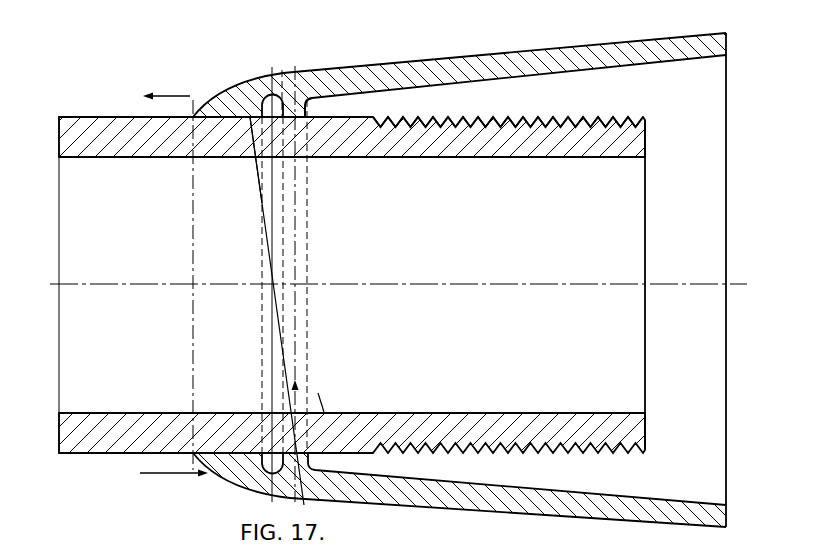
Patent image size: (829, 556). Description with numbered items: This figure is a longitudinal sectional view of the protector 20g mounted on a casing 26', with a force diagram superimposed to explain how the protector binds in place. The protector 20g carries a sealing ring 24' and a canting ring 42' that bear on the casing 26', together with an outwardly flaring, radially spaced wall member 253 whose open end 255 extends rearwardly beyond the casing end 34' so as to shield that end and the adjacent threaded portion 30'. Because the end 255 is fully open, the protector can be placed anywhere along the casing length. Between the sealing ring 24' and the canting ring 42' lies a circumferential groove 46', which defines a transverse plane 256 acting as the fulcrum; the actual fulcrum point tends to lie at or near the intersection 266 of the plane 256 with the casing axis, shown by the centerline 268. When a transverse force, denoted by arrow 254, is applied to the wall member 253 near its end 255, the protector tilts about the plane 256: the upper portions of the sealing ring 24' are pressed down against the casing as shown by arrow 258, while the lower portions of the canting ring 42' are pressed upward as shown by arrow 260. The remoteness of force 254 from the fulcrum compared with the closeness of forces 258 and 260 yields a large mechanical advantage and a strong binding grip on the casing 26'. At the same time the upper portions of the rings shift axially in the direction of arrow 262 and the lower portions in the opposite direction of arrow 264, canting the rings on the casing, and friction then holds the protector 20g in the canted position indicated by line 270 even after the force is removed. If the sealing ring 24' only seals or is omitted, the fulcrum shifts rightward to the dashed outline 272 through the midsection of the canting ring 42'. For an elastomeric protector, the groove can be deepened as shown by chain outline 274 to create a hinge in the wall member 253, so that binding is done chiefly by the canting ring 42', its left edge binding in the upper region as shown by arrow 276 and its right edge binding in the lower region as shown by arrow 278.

The protector 20g is at (401, 72).
The sealing ring 24' is at (238, 87).
The casing 26' is at (352, 285).
The threaded portion 30' is at (508, 111).
The casing end 34' is at (666, 285).
The canting ring 42' is at (329, 106).
The circumferential groove 46' is at (241, 477).
The wall member 253 is at (548, 55).
The arrow denoting transverse force 254 is at (719, 553).
The end of wall member 255 is at (727, 156).
The transverse plane 256 is at (272, 345).
The arrow denoting downward force 258 is at (232, 174).
The arrow denoting upward force 260 is at (299, 392).
The arrow denoting axial displacement 262 is at (175, 96).
The arrow denoting opposite axial displacement 264 is at (184, 476).
The intersection 266 is at (277, 283).
The central axis of pipe 268 is at (735, 284).
The line denoting canted position 270 is at (255, 170).
The dashed outline of shifted fulcrum plane 272 is at (297, 67).
The chain outline of deepened groove 274 is at (281, 85).
The arrow denoting upper binding 276 is at (290, 172).
The arrow denoting lower binding 278 is at (320, 391).